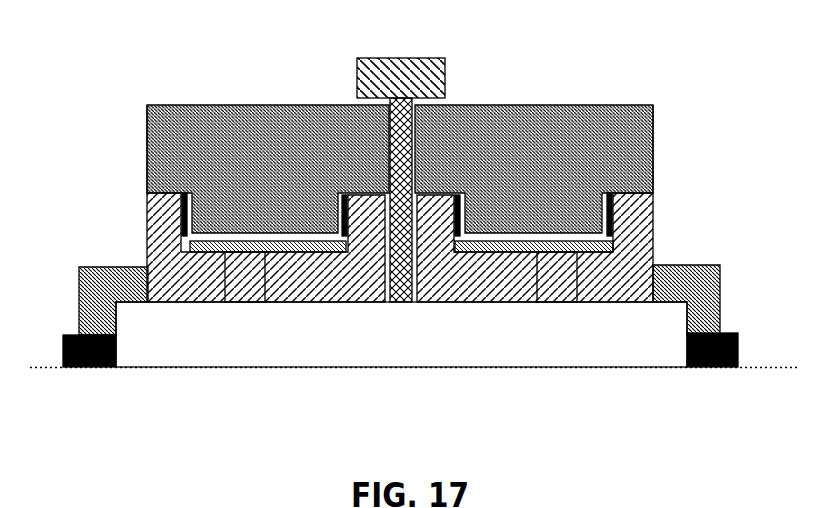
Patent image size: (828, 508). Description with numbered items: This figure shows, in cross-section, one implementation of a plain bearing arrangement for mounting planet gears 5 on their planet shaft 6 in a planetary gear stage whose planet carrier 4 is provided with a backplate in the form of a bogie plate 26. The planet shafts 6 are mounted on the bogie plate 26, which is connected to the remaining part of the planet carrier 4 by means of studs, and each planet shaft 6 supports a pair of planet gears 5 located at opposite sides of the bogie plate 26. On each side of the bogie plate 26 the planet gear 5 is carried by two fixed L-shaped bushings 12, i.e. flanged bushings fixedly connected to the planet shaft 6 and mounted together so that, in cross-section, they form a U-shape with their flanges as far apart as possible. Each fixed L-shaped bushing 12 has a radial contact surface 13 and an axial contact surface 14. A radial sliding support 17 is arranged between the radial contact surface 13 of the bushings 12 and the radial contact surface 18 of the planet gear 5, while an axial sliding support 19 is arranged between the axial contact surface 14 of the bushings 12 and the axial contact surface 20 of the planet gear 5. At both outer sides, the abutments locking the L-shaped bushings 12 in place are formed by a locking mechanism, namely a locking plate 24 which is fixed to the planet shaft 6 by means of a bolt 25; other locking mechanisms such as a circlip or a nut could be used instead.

The planet carrier 4 is at (377, 58).
The planet gear 5 is at (413, 135).
The planet shaft 6 is at (647, 342).
The fixed L-shaped bushing 12 is at (150, 212).
The radial contact surface 13 is at (550, 268).
The axial contact surface 14 is at (148, 192).
The radial sliding support 17 is at (572, 252).
The radial contact surface 18 is at (534, 135).
The axial sliding support 19 is at (146, 150).
The axial contact surface 20 is at (495, 105).
The locking plate 24 is at (77, 273).
The bolt 25 is at (62, 342).
The bogie plate 26 is at (409, 302).